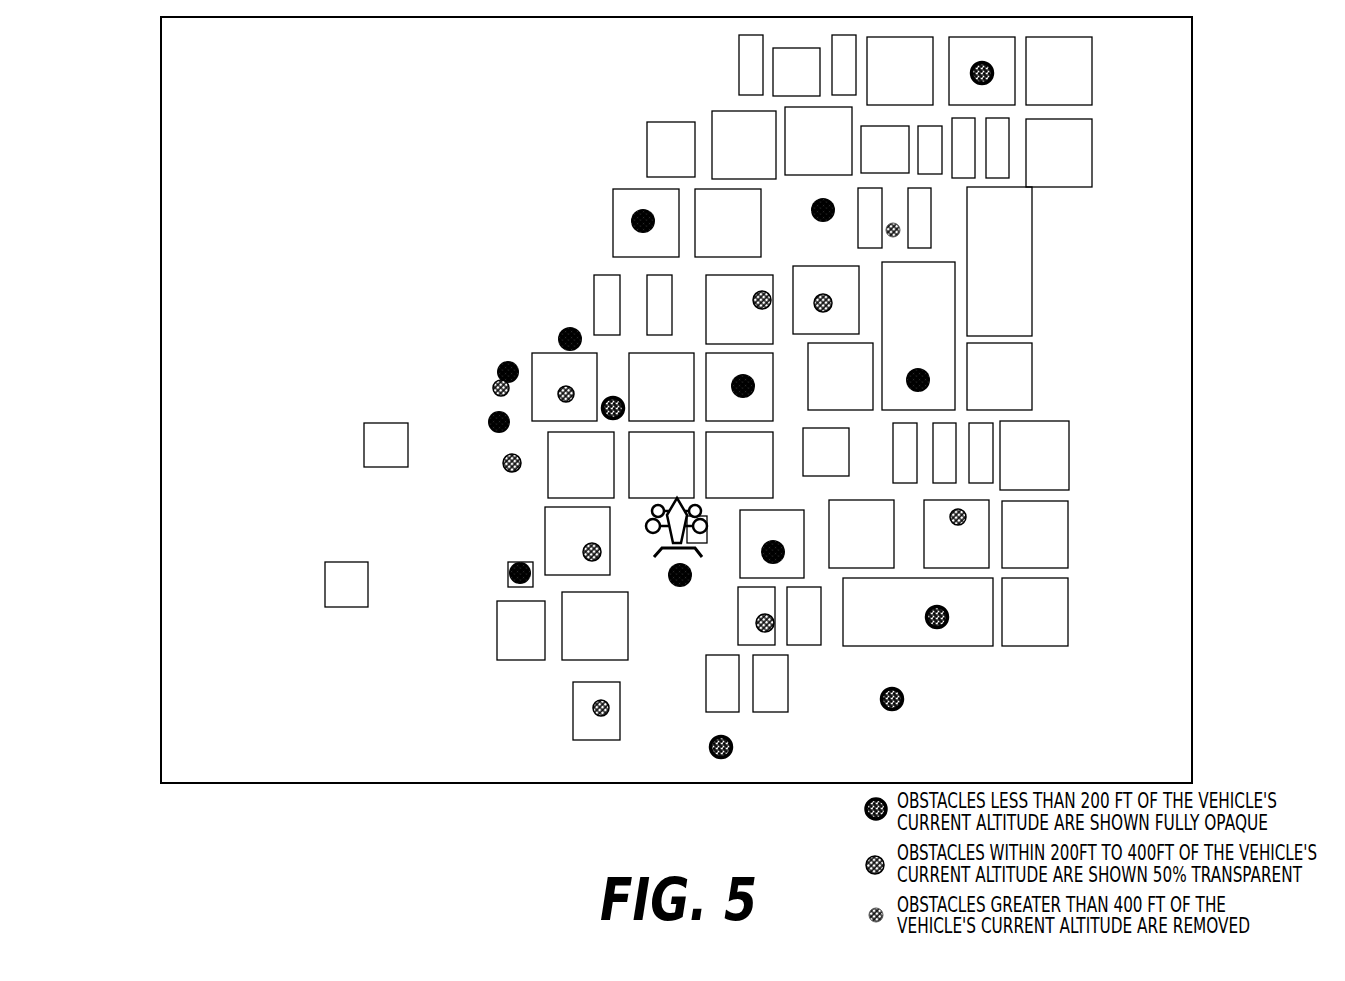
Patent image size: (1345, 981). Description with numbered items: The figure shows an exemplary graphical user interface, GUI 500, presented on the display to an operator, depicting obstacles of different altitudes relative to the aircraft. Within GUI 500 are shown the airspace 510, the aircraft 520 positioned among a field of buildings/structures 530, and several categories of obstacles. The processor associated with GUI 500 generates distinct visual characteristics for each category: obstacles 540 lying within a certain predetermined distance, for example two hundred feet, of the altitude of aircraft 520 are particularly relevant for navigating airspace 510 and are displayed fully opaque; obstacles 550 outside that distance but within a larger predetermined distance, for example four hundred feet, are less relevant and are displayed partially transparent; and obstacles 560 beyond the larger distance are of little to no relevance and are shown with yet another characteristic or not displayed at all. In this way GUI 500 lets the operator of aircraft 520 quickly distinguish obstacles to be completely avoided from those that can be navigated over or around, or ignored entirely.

The GUI 500 is at (161, 292).
The airspace 510 is at (262, 443).
The aircraft 520 is at (666, 534).
The buildings/structures 530 is at (916, 640).
The obstacles 540 is at (962, 512).
The obstacles 550 is at (755, 295).
The obstacles 560 is at (926, 374).